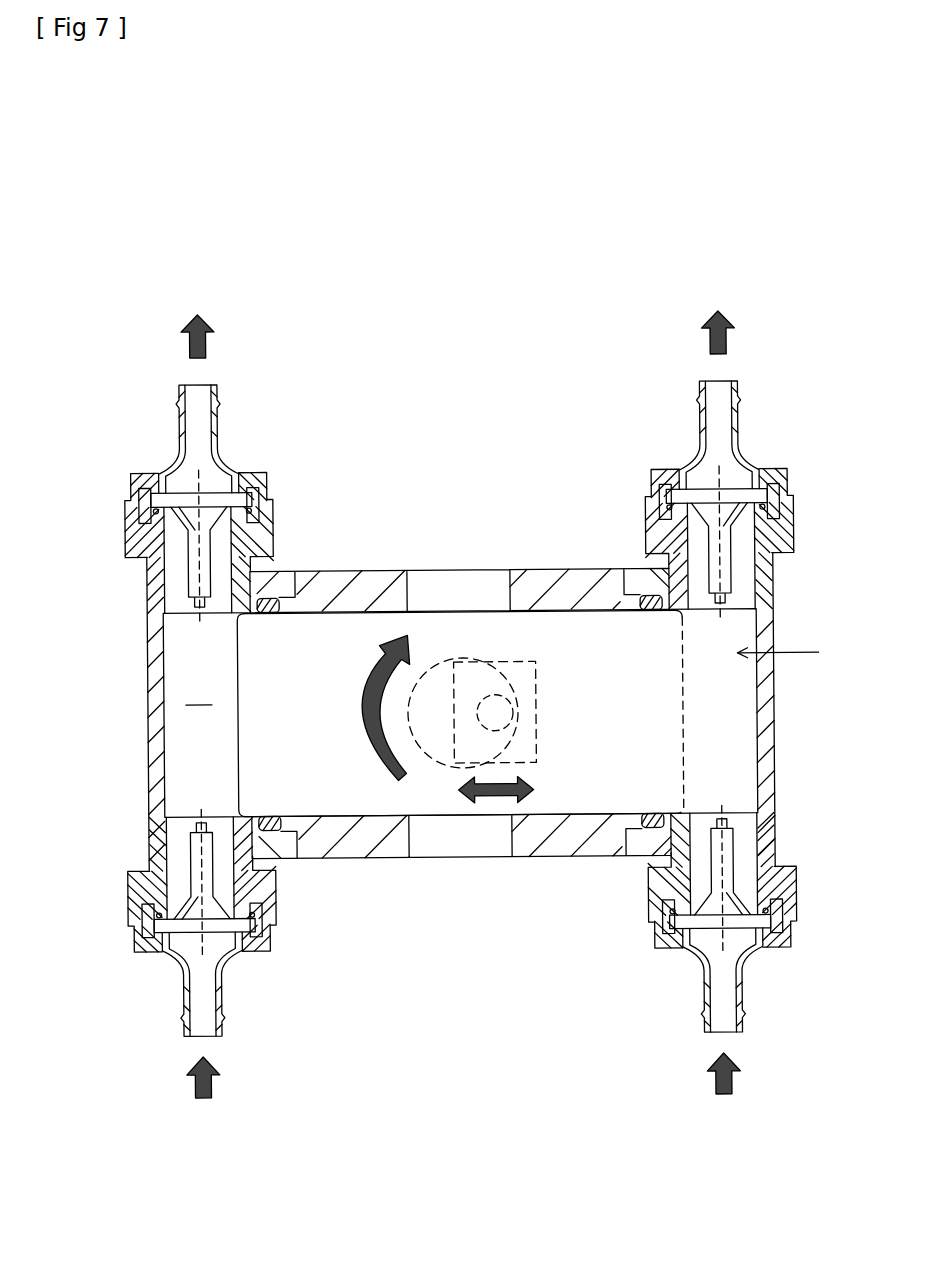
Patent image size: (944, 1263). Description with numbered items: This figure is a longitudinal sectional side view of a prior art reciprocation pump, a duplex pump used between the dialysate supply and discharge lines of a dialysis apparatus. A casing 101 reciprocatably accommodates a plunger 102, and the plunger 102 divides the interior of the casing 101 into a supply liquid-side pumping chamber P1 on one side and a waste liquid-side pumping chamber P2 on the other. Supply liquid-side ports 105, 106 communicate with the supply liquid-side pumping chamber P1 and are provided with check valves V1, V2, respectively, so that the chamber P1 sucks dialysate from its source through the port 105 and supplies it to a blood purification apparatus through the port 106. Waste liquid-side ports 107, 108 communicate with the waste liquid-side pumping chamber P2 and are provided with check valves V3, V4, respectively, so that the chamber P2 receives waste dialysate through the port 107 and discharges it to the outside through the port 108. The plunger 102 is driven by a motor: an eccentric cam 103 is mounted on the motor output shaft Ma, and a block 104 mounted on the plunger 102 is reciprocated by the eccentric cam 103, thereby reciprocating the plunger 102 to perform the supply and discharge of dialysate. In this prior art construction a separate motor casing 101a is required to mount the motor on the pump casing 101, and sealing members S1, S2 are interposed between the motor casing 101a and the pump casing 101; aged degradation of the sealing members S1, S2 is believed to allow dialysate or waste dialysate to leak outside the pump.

The casing 101 is at (136, 608).
The motor casing 101a is at (533, 834).
The plunger 102 is at (353, 789).
The eccentric cam 103 is at (487, 687).
The block 104 is at (526, 654).
The supply liquid-side port 105 is at (175, 990).
The supply liquid-side port 106 is at (173, 410).
The waste liquid-side port 107 is at (733, 992).
The waste liquid-side port 108 is at (732, 397).
The check valve V1 is at (185, 916).
The check valve V2 is at (145, 504).
The check valve V3 is at (726, 912).
The check valve V4 is at (725, 484).
The sealing member S1 is at (269, 824).
The sealing member S2 is at (637, 824).
The supply liquid-side pumping chamber P1 is at (199, 692).
The waste liquid-side pumping chamber P2 is at (791, 652).
The output shaft Ma is at (425, 652).